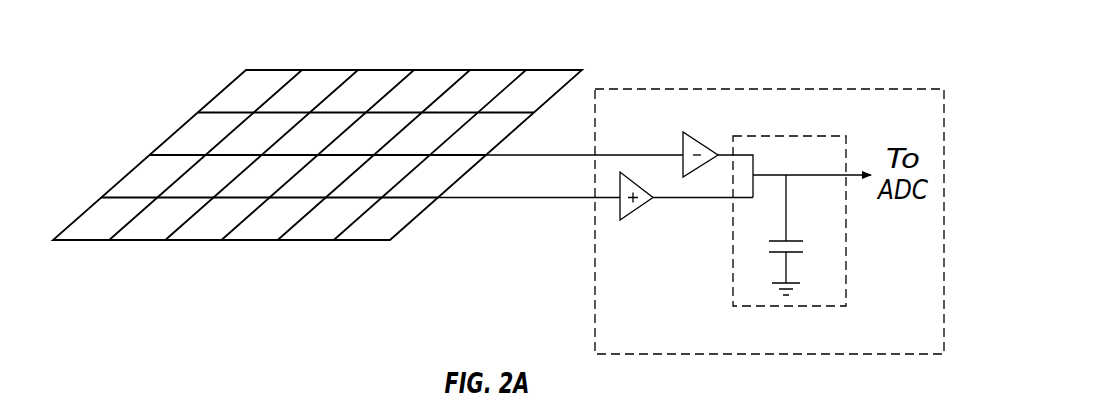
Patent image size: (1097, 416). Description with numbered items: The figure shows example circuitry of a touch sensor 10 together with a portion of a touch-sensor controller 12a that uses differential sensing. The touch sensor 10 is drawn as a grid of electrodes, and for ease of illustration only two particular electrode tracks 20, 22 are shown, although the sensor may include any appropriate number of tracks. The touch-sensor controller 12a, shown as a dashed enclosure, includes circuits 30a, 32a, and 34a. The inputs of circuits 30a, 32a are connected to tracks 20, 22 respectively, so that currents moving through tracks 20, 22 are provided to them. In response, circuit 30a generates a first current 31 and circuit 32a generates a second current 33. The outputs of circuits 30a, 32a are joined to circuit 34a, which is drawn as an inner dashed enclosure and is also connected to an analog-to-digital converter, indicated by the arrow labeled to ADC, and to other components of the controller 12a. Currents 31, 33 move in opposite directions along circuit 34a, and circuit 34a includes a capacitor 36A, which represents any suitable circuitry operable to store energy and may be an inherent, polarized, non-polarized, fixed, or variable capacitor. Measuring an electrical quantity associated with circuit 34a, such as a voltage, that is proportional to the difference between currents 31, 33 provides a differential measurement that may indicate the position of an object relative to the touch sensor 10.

The touch sensor 10 is at (237, 55).
The track 20 is at (528, 155).
The track 22 is at (513, 198).
The touch-sensor controller 12a is at (803, 86).
The circuit 30a is at (700, 140).
The circuit 32a is at (637, 207).
The first current 31 is at (722, 152).
The second current 33 is at (703, 198).
The circuit 34a is at (757, 307).
The capacitor 36A is at (812, 247).